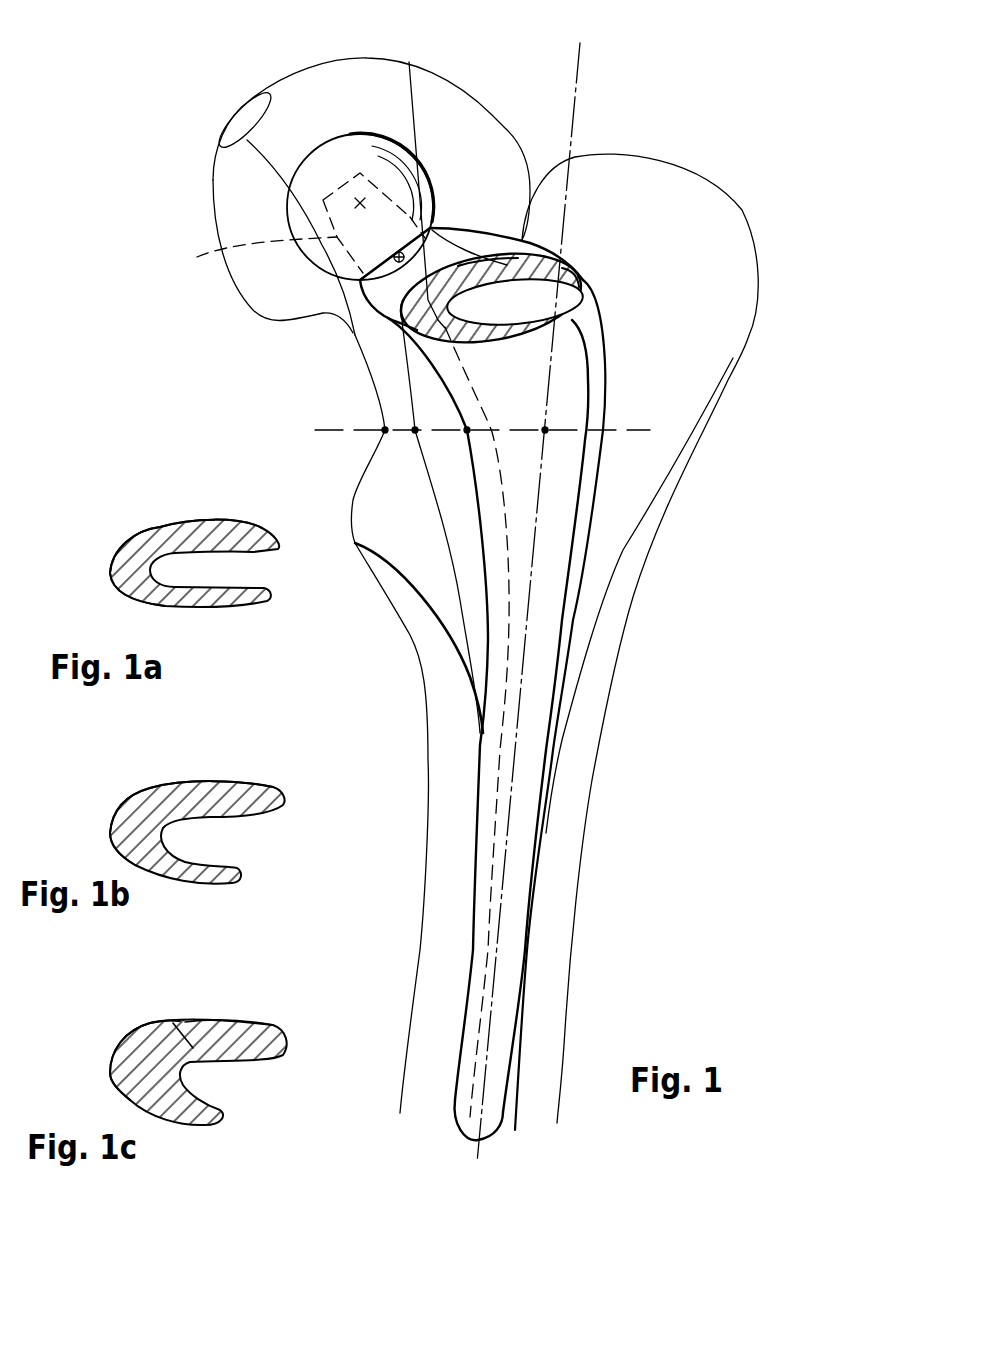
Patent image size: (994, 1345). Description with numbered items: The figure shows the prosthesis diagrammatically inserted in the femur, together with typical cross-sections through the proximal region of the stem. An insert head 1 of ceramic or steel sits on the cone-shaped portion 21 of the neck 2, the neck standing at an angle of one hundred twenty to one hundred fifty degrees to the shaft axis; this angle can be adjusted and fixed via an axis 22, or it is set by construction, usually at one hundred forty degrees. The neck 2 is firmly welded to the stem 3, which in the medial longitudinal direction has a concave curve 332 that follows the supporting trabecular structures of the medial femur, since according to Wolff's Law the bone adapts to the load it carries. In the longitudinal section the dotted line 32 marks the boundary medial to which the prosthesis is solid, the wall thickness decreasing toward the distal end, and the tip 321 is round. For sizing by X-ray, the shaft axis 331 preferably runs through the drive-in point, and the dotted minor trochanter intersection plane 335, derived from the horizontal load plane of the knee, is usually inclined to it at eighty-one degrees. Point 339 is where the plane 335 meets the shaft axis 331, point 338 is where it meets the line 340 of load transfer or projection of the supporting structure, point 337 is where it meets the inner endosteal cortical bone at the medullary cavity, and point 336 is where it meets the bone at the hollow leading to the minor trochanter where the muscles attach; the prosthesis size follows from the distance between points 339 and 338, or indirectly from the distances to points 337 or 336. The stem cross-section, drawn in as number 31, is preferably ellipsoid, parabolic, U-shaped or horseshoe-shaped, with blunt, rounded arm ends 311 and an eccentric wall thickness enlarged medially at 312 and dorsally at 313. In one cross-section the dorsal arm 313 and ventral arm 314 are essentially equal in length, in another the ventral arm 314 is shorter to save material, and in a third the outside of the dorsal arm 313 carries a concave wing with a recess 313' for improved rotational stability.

In FIG. 1, the insert head 1 is at (290, 207).
In FIG. 1, the neck 2 is at (367, 300).
In FIG. 1, the cone-shaped portion 21 is at (198, 257).
In FIG. 1, the axis 22 is at (450, 227).
In FIG. 1, the stem 3 is at (476, 867).
In FIG. 1, the cross-section of the stem 31 is at (498, 362).
In FIG. 1, the ends of the arms 311 is at (580, 282).
In FIG. 1A, the ends of the arms 311 is at (275, 590).
In FIG. 1B, the ends of the arms 311 is at (287, 803).
In FIG. 1C, the ends of the arms 311 is at (287, 1047).
In FIG. 1, the medial enlargement 312 is at (398, 312).
In FIG. 1A, the medial enlargement 312 is at (117, 573).
In FIG. 1B, the medial enlargement 312 is at (113, 833).
In FIG. 1C, the medial enlargement 312 is at (113, 1070).
In FIG. 1, the dorsal arm or wing 313 is at (488, 222).
In FIG. 1A, the dorsal arm or wing 313 is at (192, 505).
In FIG. 1B, the dorsal arm or wing 313 is at (211, 759).
In FIG. 1C, the dorsal arm or wing 313 is at (163, 998).
In FIG. 1C, the recess 313' is at (223, 1010).
In FIG. 1A, the ventral arm or wing 314 is at (187, 603).
In FIG. 1B, the ventral arm or wing 314 is at (170, 880).
In FIG. 1C, the ventral arm or wing 314 is at (180, 1123).
In FIG. 1, the dotted line 32 is at (501, 755).
In FIG. 1, the tip of the prosthesis 321 is at (478, 1140).
In FIG. 1, the shaft axis 331 is at (573, 95).
In FIG. 1, the concave curve 332 is at (432, 357).
In FIG. 1, the minor trochanter intersection plane 335 is at (313, 430).
In FIG. 1, the point 336 is at (383, 432).
In FIG. 1, the point 337 is at (413, 432).
In FIG. 1, the point 338 is at (465, 433).
In FIG. 1, the point 339 is at (547, 432).
In FIG. 1, the line of load transfer 340 is at (409, 90).